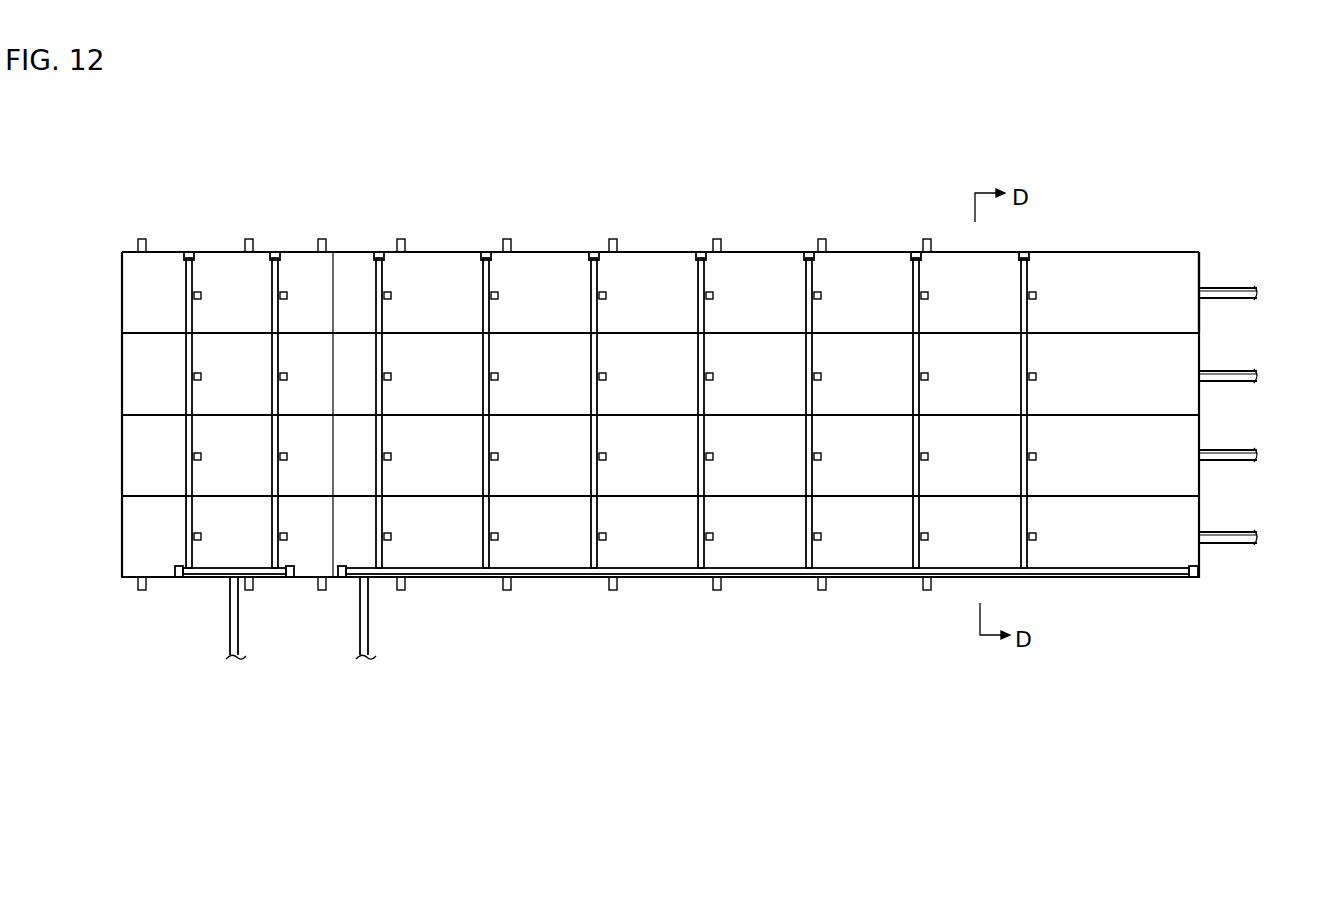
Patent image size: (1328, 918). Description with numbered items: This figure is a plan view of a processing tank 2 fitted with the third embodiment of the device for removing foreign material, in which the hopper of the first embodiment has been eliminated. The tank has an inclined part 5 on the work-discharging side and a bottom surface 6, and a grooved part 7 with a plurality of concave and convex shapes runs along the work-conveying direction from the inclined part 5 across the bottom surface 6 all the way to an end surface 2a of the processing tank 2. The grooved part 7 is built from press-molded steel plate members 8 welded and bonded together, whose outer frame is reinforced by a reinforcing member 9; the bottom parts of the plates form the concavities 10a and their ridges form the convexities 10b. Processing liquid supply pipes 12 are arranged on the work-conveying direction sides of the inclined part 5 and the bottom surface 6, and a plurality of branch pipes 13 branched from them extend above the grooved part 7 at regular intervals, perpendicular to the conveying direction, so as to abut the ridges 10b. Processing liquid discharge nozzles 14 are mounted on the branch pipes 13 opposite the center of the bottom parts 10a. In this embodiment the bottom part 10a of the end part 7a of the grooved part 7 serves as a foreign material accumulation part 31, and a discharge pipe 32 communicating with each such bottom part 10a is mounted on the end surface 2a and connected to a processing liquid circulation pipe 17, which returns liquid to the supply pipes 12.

The processing tank 2 is at (744, 225).
The end surface 2a is at (1201, 270).
The inclined part 5 is at (226, 262).
The bottom surface 6 is at (515, 268).
The grooved part 7 is at (421, 275).
The end part 7a is at (1163, 290).
The steel plate member 8 is at (872, 272).
The reinforcing member 9 is at (717, 592).
The concavity 10a is at (676, 379).
The convexity 10b is at (643, 333).
The processing liquid supply pipe 12 is at (200, 572).
The branch pipe 13 is at (195, 433).
The processing liquid discharge nozzle 14 is at (203, 376).
The processing liquid circulation pipe 17 is at (240, 612).
The foreign material accumulation part 31 is at (1178, 297).
The discharge pipe 32 is at (1236, 286).